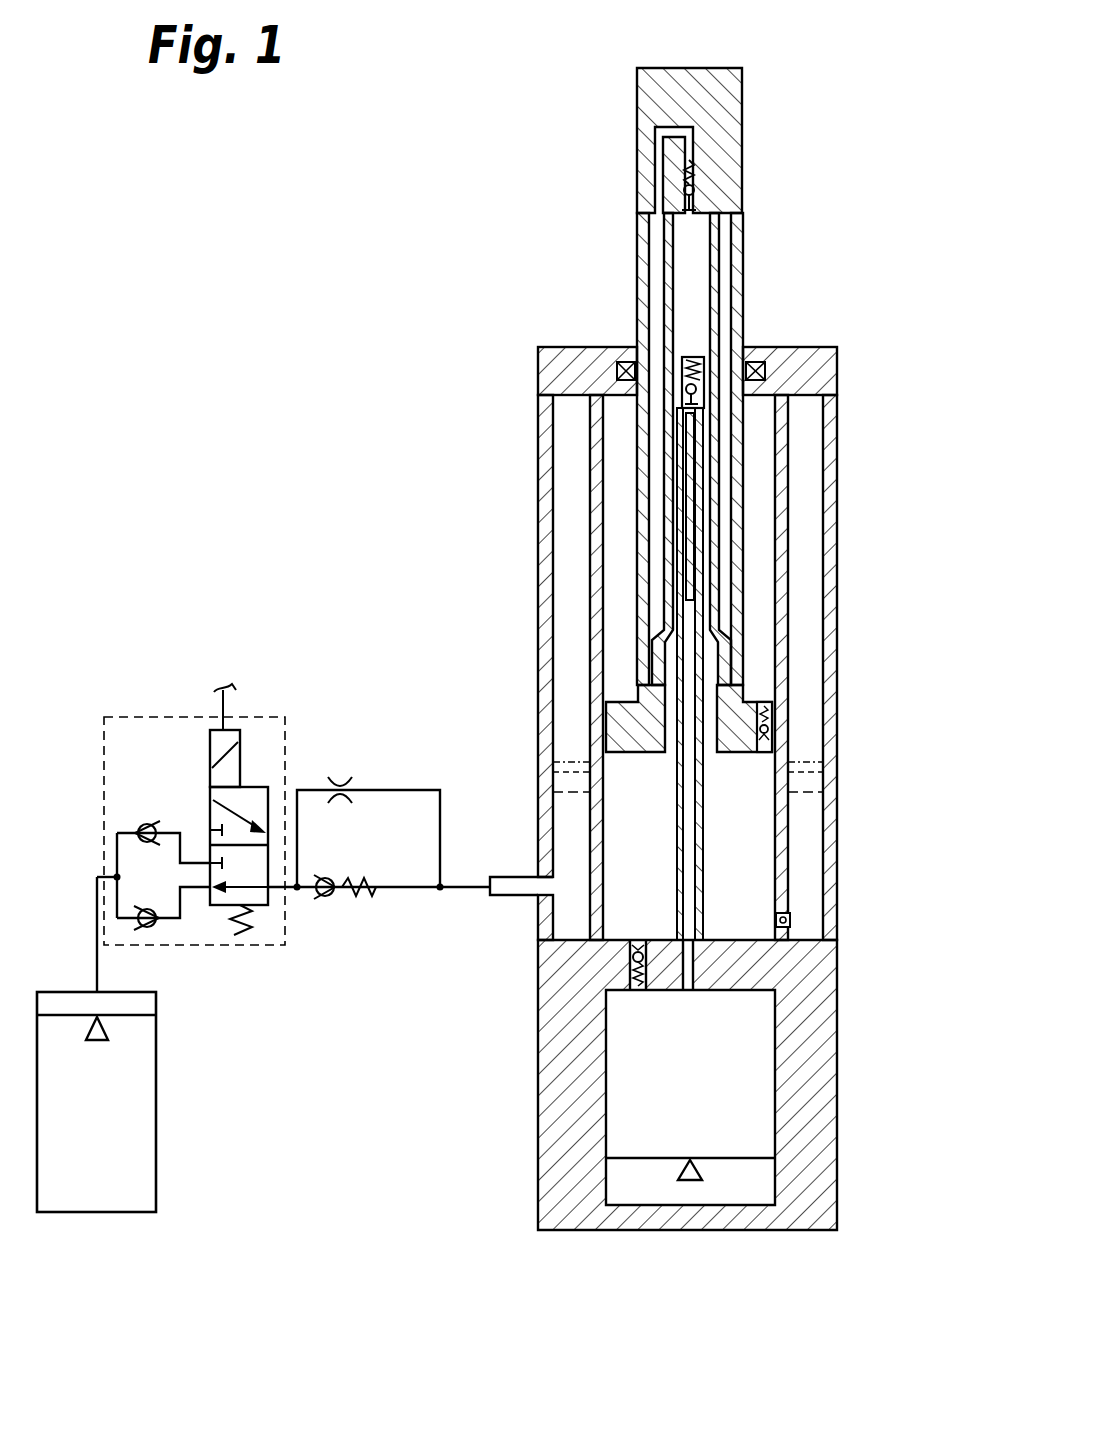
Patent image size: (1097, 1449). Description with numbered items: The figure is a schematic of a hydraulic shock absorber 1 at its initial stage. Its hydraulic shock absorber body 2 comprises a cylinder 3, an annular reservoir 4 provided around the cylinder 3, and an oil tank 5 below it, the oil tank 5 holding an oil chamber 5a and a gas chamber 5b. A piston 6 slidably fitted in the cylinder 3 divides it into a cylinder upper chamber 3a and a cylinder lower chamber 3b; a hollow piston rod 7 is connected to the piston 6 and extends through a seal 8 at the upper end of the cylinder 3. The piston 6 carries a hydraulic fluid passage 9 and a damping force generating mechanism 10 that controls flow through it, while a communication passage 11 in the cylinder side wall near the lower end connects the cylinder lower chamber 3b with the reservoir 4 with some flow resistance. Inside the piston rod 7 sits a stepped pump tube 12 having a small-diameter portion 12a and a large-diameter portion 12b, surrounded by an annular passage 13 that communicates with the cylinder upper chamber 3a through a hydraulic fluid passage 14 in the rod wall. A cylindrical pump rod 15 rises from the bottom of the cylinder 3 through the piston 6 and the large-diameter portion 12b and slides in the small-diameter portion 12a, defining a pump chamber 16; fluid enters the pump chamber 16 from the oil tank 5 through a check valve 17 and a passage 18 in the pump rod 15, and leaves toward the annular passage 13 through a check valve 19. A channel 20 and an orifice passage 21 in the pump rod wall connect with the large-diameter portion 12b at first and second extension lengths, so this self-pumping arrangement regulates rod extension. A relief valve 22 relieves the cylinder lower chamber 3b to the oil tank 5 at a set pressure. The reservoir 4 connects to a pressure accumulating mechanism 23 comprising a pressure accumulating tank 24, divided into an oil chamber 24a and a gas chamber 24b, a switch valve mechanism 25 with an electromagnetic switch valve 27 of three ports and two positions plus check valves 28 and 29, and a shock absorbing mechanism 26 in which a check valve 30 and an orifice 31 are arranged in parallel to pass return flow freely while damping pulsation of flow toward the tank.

The hydraulic shock absorber 1 is at (396, 225).
The hydraulic shock absorber body 2 is at (540, 345).
The cylinder 3 is at (812, 392).
The cylinder upper chamber 3a is at (616, 452).
The cylinder lower chamber 3b is at (550, 918).
The annular reservoir 4 is at (567, 502).
The oil tank 5 is at (563, 1100).
The oil chamber 5a is at (764, 1072).
The gas chamber 5b is at (748, 1192).
The piston 6 is at (606, 720).
The piston rod 7 is at (692, 68).
The seal 8 is at (619, 364).
The hydraulic fluid passage 9 is at (796, 697).
The damping force generating mechanism 10 is at (762, 722).
The communication passage 11 is at (783, 925).
The pump tube 12 is at (736, 296).
The small-diameter portion 12a is at (700, 282).
The large-diameter portion 12b is at (768, 782).
The annular passage 13 is at (656, 540).
The hydraulic fluid passage 14 is at (646, 640).
The pump rod 15 is at (766, 842).
The pump chamber 16 is at (687, 242).
The check valve 17 is at (705, 388).
The passage 18 is at (688, 818).
The check valve 19 is at (696, 186).
The channel 20 is at (683, 578).
The orifice passage 21 is at (708, 586).
The relief valve 22 is at (634, 962).
The pressure accumulating mechanism 23 is at (240, 608).
The pressure accumulating tank 24 is at (142, 1212).
The oil chamber 24a is at (148, 1004).
The gas chamber 24b is at (148, 1095).
The switch valve mechanism 25 is at (126, 714).
The shock absorbing mechanism 26 is at (388, 781).
The electromagnetic switch valve 27 is at (251, 785).
The check valve 28 is at (158, 927).
The check valve 29 is at (145, 822).
The check valve 30 is at (342, 893).
The orifice 31 is at (340, 788).